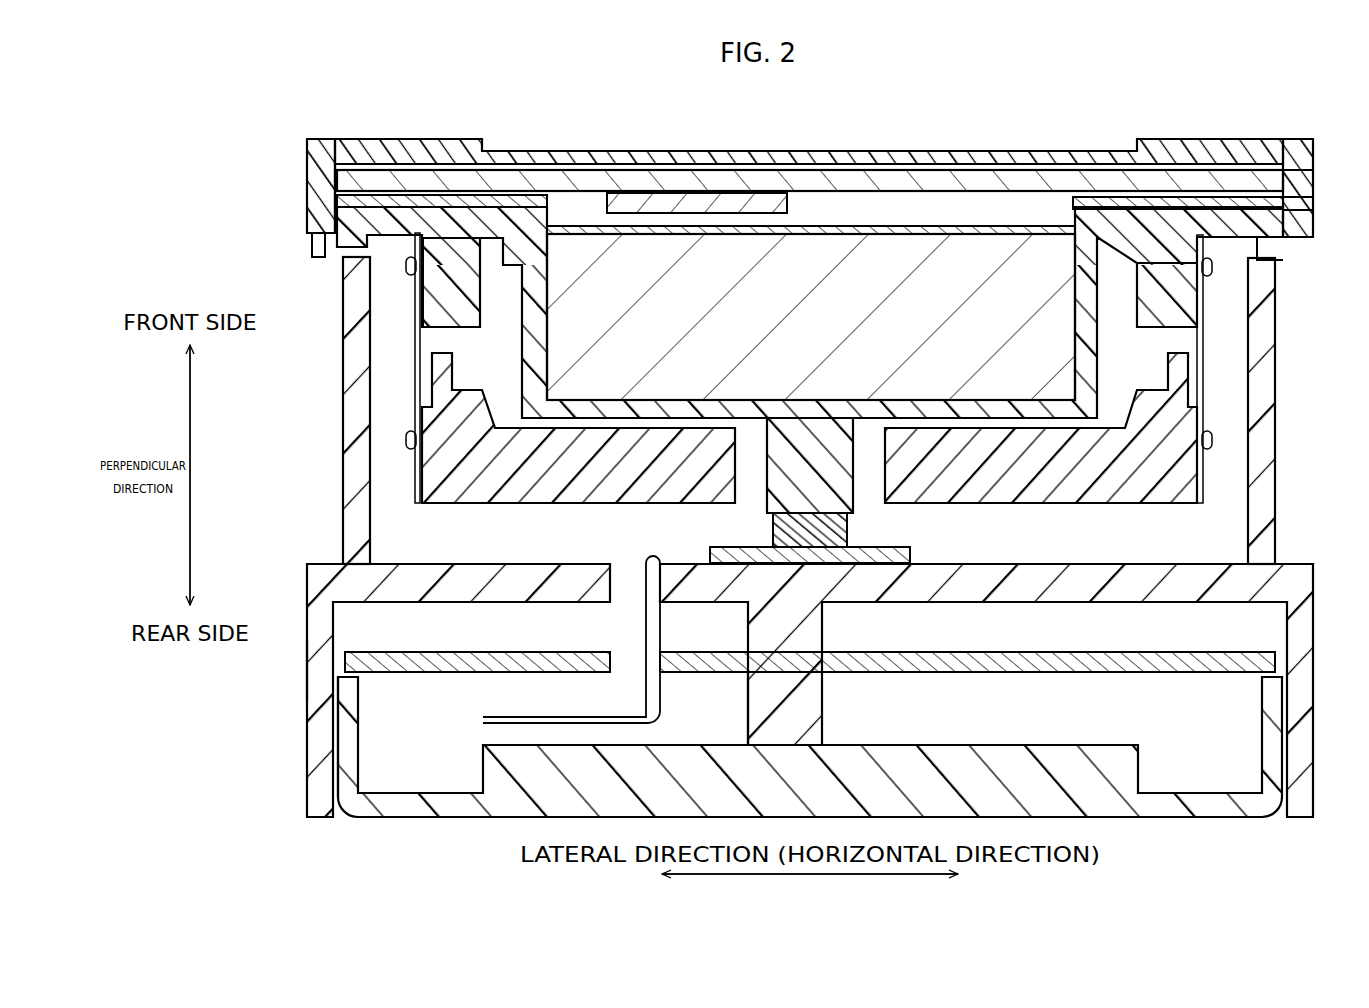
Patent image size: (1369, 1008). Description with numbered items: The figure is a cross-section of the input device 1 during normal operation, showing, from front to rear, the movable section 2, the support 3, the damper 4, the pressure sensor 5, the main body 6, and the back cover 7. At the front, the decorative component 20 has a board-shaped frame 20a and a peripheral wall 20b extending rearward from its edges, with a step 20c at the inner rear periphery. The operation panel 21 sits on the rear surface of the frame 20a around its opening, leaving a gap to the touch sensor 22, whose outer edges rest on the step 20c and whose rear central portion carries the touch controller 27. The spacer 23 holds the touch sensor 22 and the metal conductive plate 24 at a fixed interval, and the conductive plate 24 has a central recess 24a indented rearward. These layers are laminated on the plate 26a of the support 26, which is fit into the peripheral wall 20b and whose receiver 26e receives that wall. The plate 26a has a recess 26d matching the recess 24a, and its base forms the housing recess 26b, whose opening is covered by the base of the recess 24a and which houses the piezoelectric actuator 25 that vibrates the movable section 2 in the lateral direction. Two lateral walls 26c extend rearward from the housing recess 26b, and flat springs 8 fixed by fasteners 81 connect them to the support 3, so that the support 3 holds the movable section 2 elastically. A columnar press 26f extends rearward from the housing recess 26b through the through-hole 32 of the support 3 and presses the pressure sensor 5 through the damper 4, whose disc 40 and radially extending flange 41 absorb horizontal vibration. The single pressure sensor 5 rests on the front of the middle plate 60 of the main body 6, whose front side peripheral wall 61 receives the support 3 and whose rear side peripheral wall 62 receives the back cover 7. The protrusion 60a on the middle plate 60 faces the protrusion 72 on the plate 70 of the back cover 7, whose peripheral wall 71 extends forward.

The input device 1 is at (266, 86).
The movable section 2 is at (1221, 166).
The support 3 is at (749, 443).
The damper 4 is at (750, 562).
The pressure sensor 5 is at (810, 563).
The main body 6 is at (777, 663).
The back cover 7 is at (769, 778).
The elastic component 8 is at (416, 345).
The decorative component 20 is at (753, 152).
The frame 20a is at (392, 139).
The peripheral wall 20b is at (330, 185).
The step 20c is at (337, 201).
The operation panel 21 is at (790, 170).
The touch sensor 22 is at (1296, 188).
The spacer 23 is at (1298, 205).
The conductive plate 24 is at (1296, 228).
The recess 24a is at (848, 226).
The actuator 25 is at (722, 270).
The support 26 is at (758, 308).
The plate 26a is at (455, 195).
The housing recess 26b is at (920, 400).
The lateral walls 26c is at (470, 278).
The recess 26d is at (542, 195).
The receiver 26e is at (315, 252).
The press 26f is at (853, 465).
The touch controller 27 is at (650, 193).
The through-hole 32 is at (735, 470).
The disc 40 is at (773, 530).
The flange 41 is at (710, 555).
The middle plate 60 is at (480, 575).
The protrusion 60a is at (850, 636).
The front side peripheral wall 61 is at (345, 380).
The rear side peripheral wall 62 is at (315, 672).
The plate 70 is at (410, 800).
The peripheral wall 71 is at (343, 742).
The protrusion 72 is at (850, 690).
The fastener 81 is at (406, 266).